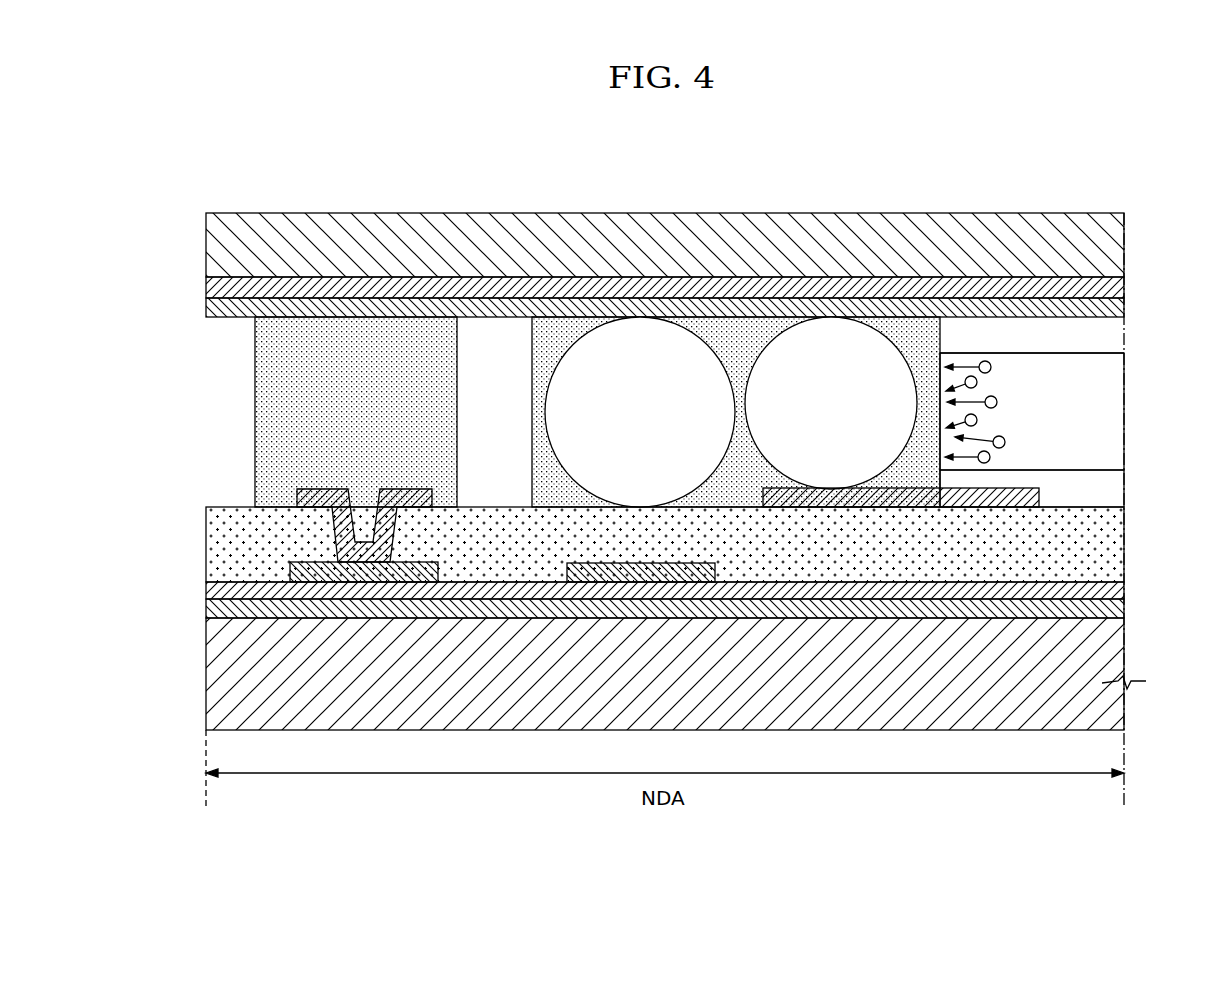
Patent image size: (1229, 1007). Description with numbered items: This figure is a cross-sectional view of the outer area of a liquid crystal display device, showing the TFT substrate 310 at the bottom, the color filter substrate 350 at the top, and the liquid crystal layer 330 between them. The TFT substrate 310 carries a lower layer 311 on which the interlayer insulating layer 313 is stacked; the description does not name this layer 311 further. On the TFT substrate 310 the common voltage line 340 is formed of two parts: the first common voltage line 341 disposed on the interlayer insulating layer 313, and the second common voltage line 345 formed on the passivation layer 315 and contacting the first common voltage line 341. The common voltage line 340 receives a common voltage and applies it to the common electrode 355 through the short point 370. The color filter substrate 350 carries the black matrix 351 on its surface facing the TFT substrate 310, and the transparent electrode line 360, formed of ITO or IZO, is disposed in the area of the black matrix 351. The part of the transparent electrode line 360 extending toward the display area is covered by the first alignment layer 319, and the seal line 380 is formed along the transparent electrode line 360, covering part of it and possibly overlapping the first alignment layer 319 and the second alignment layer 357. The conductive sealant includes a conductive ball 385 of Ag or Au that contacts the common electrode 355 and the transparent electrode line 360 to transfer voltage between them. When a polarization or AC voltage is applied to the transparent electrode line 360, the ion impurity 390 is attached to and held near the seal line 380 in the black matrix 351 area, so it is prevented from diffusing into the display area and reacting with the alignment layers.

The TFT substrate 310 is at (217, 675).
The buffer layer 311 is at (1113, 610).
The interlayer insulating layer 313 is at (1113, 590).
The passivation layer 315 is at (1115, 547).
The first alignment layer 319 is at (1113, 485).
The liquid crystal layer 330 is at (1113, 400).
The common voltage line 340 is at (390, 537).
The first common voltage line 341 is at (307, 569).
The second common voltage line 345 is at (333, 533).
The color filter substrate 350 is at (217, 252).
The black matrix 351 is at (217, 289).
The common electrode 355 is at (215, 312).
The second alignment layer 357 is at (1113, 343).
The transparent electrode line 360 is at (1013, 497).
The short point 370 is at (275, 405).
The seal line 380 is at (737, 337).
The conductive ball 385 is at (642, 337).
The ion impurity 390 is at (997, 402).